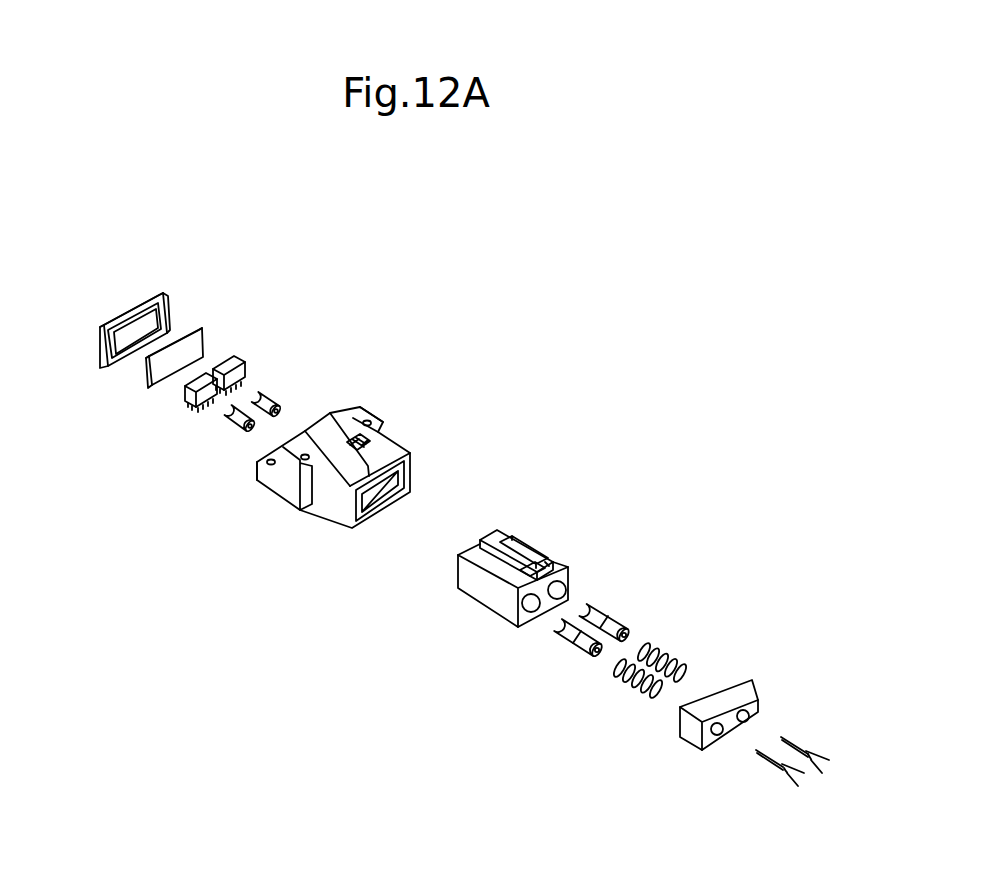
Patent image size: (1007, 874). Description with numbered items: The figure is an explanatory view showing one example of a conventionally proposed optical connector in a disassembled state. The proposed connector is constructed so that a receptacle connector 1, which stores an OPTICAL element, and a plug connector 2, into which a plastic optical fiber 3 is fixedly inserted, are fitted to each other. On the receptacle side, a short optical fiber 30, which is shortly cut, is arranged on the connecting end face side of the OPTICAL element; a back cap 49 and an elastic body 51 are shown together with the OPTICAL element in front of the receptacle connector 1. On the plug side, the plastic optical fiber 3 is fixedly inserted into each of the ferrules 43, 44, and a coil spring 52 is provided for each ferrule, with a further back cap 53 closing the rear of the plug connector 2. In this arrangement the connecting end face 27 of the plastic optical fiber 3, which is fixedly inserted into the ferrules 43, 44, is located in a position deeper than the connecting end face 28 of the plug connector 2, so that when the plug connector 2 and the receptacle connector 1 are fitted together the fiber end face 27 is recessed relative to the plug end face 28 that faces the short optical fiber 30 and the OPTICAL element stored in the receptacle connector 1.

The receptacle connector 1 is at (395, 433).
The plug connector 2 is at (560, 565).
The plastic optical fiber 3 is at (818, 755).
The connecting end face 27 is at (781, 738).
The connecting end face 28 is at (472, 548).
The short optical fiber 30 is at (280, 400).
The ferrule 43 is at (575, 645).
The ferrule 44 is at (615, 616).
The back cap 49 is at (167, 294).
The elastic body 51 is at (200, 330).
The coil spring 52 is at (672, 660).
The back cap 53 is at (750, 693).
The optical element OPTICAL is at (240, 356).